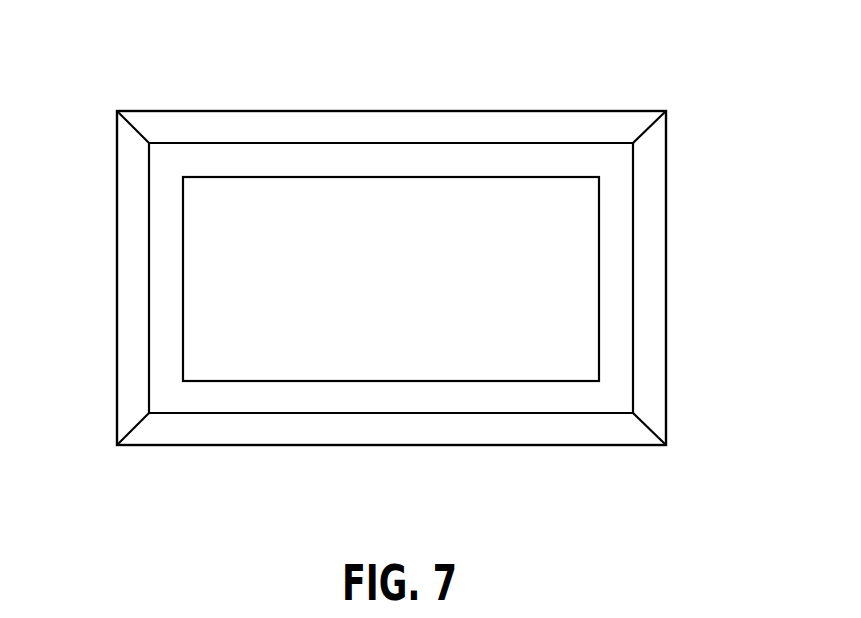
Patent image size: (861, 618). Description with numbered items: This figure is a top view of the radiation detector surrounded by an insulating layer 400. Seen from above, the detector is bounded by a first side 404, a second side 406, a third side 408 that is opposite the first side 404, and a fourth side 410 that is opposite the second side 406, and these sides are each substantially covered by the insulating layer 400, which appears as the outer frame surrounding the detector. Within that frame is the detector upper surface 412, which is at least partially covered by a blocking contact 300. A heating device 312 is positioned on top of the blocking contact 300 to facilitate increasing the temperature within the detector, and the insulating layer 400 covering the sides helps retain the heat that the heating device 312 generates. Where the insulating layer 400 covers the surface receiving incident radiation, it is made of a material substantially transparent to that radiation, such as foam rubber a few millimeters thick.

The blocking contact 300 is at (613, 220).
The heating device 312 is at (404, 289).
The insulating layer 400 is at (485, 127).
The first side 404 is at (633, 279).
The second side 406 is at (246, 414).
The third side 408 is at (148, 312).
The fourth side 410 is at (391, 144).
The upper surface 412 is at (578, 158).